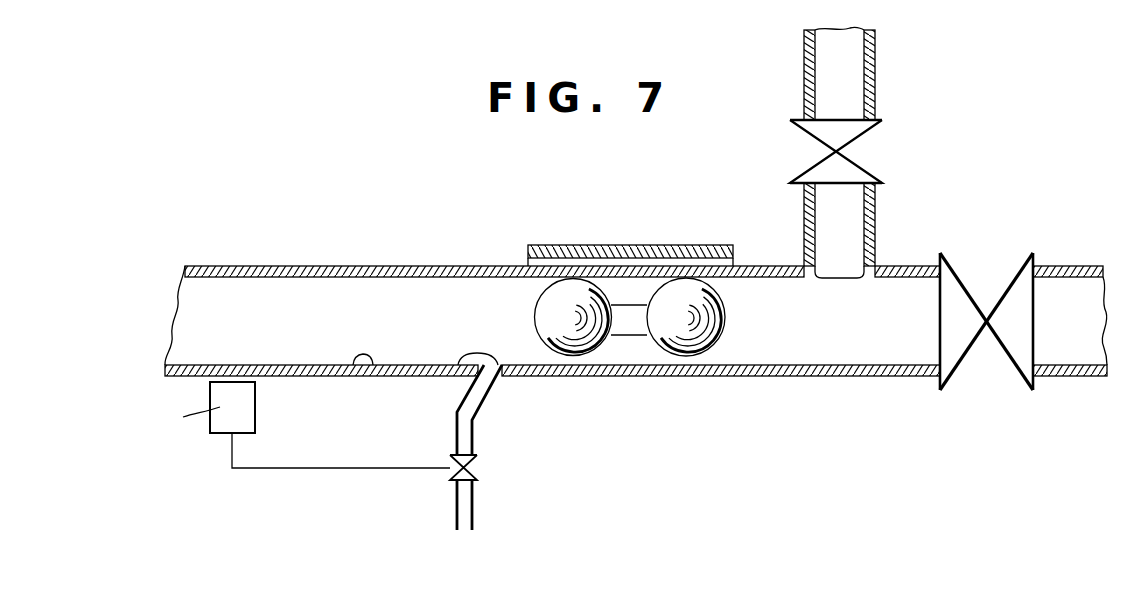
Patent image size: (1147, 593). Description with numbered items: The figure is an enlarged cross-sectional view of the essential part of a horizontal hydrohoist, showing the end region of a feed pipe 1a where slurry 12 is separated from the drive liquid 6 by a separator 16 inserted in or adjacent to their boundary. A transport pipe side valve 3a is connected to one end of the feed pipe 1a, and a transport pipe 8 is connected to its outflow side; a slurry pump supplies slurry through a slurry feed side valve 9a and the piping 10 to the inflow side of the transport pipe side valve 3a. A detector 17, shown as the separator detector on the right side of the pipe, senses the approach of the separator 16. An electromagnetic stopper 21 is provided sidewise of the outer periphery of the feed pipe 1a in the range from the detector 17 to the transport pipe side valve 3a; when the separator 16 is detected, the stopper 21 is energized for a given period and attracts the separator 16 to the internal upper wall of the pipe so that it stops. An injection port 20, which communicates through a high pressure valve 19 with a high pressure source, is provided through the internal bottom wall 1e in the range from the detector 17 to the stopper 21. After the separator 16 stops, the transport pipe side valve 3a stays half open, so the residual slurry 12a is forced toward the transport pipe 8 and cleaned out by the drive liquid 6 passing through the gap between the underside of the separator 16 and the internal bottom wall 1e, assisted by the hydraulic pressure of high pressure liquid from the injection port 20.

The piping 10 is at (552, 322).
The feed pipe 1a is at (443, 266).
The internal bottom wall 1e is at (366, 376).
The drive liquid 6 is at (346, 302).
The electromagnetic stopper 21 is at (562, 245).
The separator 16 is at (628, 305).
The residual slurry 12a is at (591, 366).
The slurry 12 is at (794, 352).
The slurry feed side valve 9a is at (808, 176).
The transport pipe side valve 3a is at (1005, 294).
The transport pipe 8 is at (1073, 266).
The injection port 20 is at (458, 376).
The high pressure valve 19 is at (474, 467).
The detector 17 is at (257, 420).